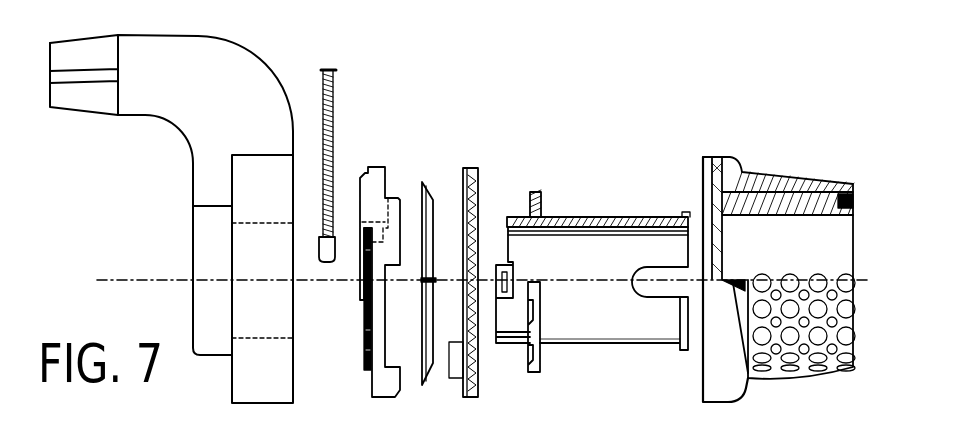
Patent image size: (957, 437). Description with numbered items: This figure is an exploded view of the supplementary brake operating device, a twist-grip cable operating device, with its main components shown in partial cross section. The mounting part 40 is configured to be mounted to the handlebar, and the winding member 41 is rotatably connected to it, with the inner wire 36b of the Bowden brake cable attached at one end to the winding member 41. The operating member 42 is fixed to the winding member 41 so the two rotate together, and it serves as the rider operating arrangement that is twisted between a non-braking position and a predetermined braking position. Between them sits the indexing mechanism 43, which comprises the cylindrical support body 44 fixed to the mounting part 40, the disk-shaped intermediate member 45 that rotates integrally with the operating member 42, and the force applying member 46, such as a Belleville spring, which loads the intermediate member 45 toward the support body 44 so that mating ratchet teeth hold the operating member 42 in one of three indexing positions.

The mounting part 40 is at (262, 64).
The inner wire 36b is at (334, 72).
The winding member 41 is at (378, 166).
The indexing mechanism 43 is at (590, 117).
The force applying member 46 is at (425, 181).
The intermediate member 45 is at (477, 167).
The cylindrical support body 44 is at (587, 216).
The operating member 42 is at (755, 175).